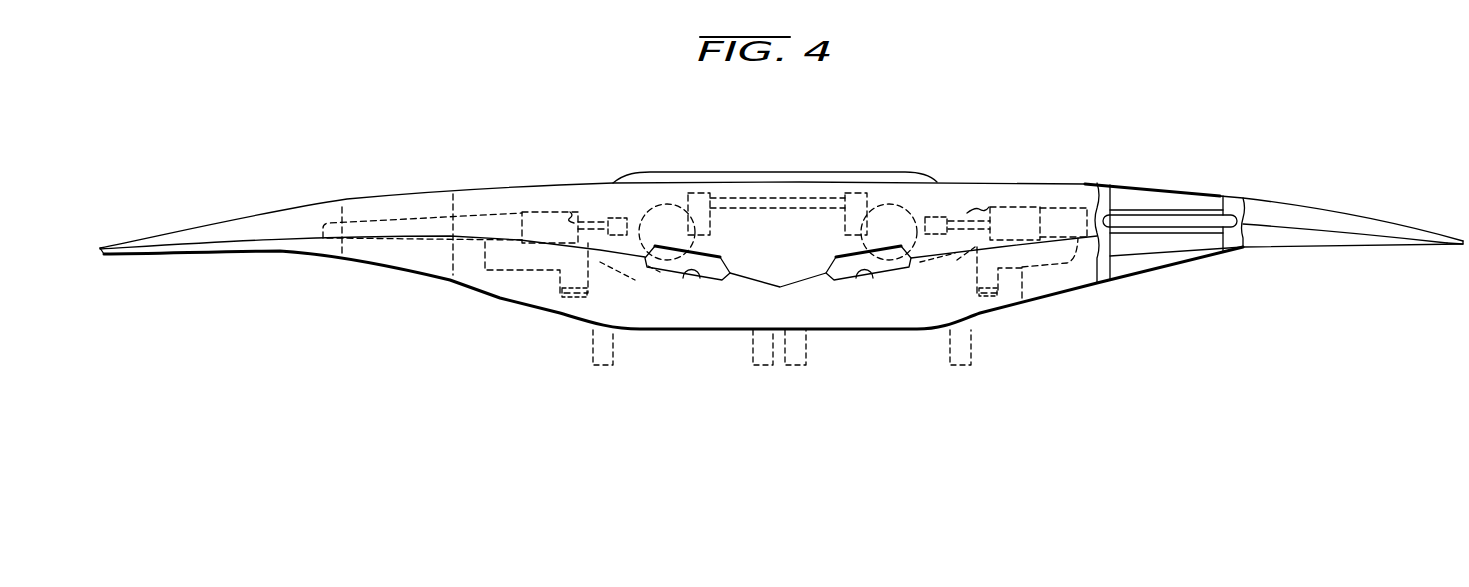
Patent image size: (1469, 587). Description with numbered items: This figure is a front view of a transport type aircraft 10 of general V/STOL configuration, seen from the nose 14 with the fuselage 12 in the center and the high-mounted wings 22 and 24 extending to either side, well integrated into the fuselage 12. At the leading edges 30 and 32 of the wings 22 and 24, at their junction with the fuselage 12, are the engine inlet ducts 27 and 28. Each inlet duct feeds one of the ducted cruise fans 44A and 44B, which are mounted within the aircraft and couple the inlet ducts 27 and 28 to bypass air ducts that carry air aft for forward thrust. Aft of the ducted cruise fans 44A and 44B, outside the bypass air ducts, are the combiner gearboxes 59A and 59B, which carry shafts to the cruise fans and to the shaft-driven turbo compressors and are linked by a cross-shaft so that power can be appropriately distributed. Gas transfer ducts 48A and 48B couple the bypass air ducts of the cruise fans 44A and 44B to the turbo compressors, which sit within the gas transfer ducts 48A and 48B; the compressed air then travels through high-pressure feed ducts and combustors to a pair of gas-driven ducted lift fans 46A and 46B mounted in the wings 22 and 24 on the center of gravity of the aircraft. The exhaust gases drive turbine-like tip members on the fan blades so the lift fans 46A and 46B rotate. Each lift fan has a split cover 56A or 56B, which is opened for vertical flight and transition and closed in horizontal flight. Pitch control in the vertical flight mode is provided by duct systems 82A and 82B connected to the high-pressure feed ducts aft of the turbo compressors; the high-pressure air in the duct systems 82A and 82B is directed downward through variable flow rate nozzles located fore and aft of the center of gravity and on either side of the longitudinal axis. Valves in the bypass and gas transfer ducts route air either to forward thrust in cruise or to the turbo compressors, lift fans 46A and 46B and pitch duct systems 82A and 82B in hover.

The aircraft 10 is at (1060, 146).
The fuselage 12 is at (915, 331).
The nose 14 is at (780, 287).
The wing 22 is at (262, 209).
The wing 24 is at (1330, 210).
The engine inlet duct 27 is at (700, 278).
The engine inlet duct 28 is at (862, 278).
The leading edge 30 is at (307, 234).
The leading edge 32 is at (1272, 226).
The ducted cruise fan 44A is at (693, 173).
The ducted cruise fan 44B is at (871, 182).
The gas-driven ducted lift fan 46A is at (357, 199).
The gas-driven ducted lift fan 46B is at (1237, 168).
The gas transfer duct 48A is at (577, 198).
The gas transfer duct 48B is at (980, 206).
The split cover 56A is at (421, 193).
The split cover 56B is at (1168, 186).
The combiner gearbox 59A is at (620, 182).
The combiner gearbox 59B is at (938, 183).
The duct system 82A is at (503, 270).
The duct system 82B is at (1027, 303).